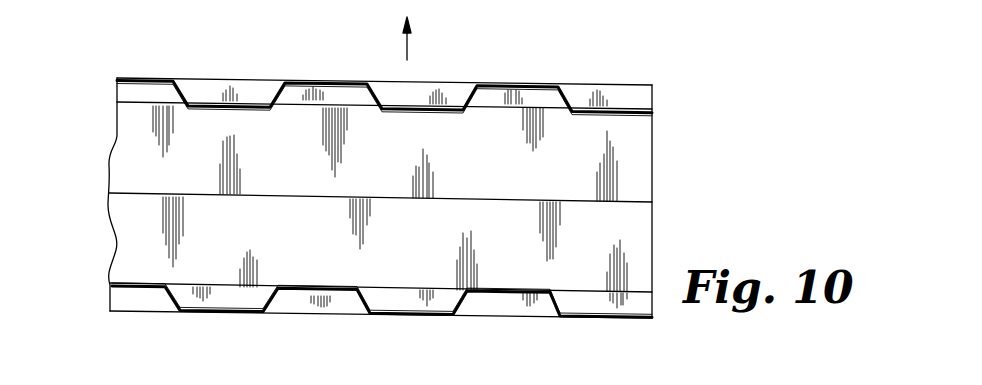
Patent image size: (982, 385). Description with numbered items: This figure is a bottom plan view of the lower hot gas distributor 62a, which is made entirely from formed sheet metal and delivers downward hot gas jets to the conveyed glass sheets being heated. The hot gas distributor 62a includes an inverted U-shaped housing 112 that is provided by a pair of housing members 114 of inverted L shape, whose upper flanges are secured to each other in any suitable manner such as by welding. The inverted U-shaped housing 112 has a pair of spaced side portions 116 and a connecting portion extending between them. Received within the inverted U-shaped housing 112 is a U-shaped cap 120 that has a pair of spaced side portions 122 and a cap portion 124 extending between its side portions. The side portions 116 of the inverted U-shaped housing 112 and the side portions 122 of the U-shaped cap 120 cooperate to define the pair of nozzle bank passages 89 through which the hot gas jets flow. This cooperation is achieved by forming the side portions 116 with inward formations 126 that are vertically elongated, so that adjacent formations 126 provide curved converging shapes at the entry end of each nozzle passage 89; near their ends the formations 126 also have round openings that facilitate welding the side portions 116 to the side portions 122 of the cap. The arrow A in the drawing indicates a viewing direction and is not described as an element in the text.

The hot gas distributor 62a is at (652, 60).
The inverted U-shaped housing 112 is at (662, 81).
The housing members 114 is at (117, 78).
The side portions 116 is at (571, 96).
The U-shaped cap 120 is at (604, 200).
The side portions 122 is at (585, 295).
The cap portion 124 is at (597, 232).
The inward formations 126 is at (193, 92).
The nozzle bank passages 89 is at (147, 86).
The direction arrow A is at (408, 52).